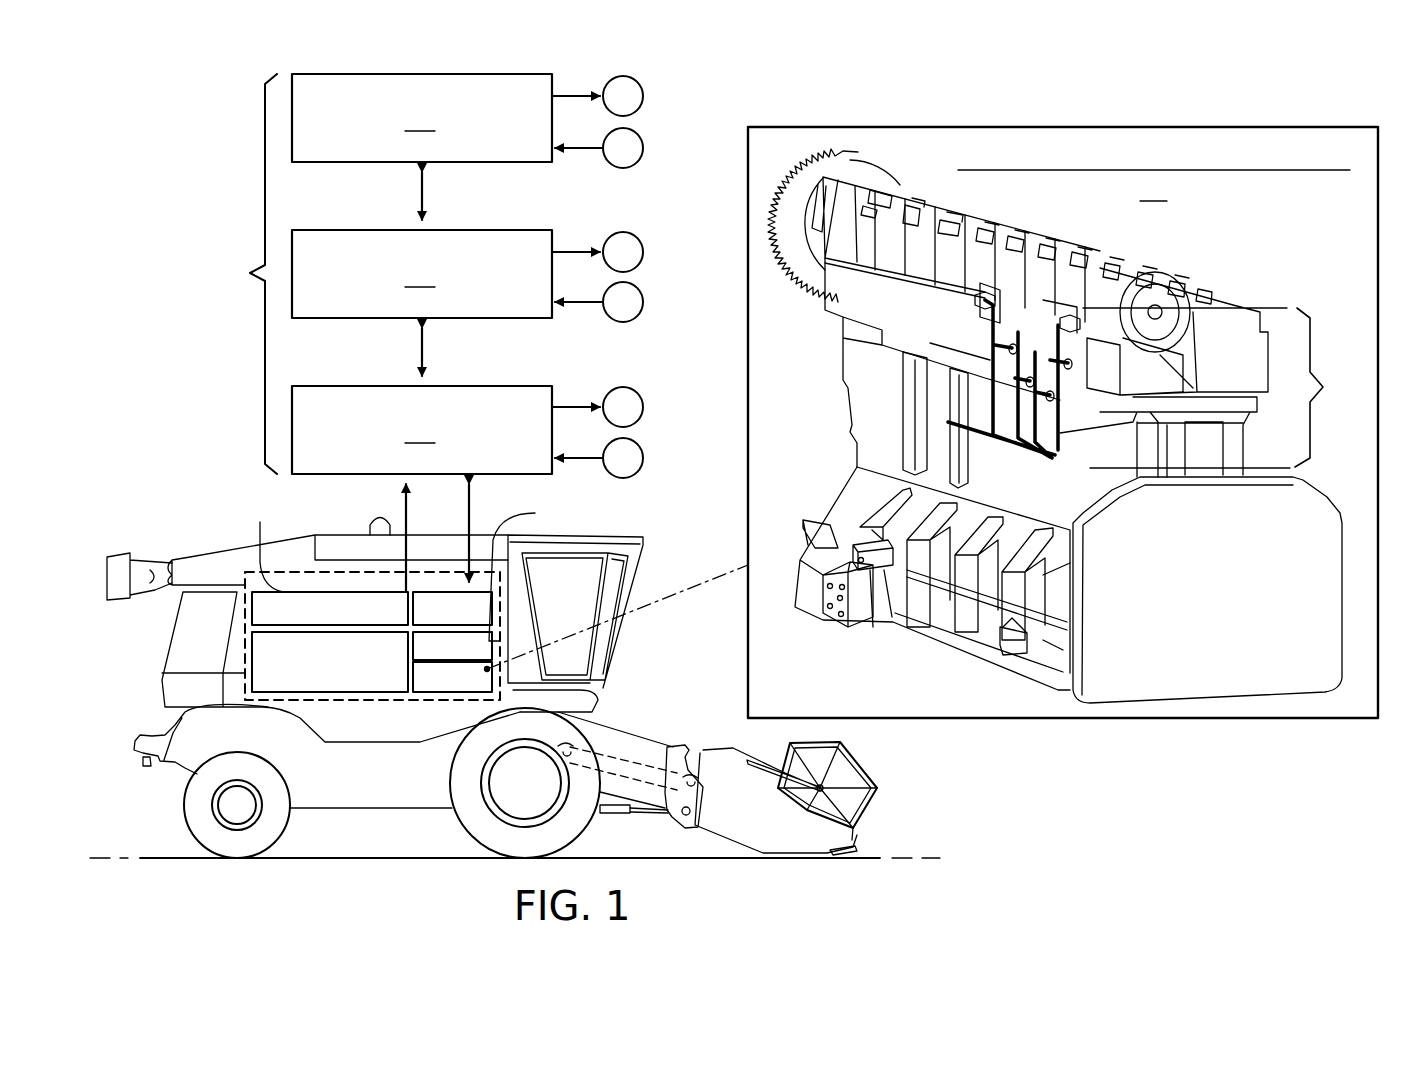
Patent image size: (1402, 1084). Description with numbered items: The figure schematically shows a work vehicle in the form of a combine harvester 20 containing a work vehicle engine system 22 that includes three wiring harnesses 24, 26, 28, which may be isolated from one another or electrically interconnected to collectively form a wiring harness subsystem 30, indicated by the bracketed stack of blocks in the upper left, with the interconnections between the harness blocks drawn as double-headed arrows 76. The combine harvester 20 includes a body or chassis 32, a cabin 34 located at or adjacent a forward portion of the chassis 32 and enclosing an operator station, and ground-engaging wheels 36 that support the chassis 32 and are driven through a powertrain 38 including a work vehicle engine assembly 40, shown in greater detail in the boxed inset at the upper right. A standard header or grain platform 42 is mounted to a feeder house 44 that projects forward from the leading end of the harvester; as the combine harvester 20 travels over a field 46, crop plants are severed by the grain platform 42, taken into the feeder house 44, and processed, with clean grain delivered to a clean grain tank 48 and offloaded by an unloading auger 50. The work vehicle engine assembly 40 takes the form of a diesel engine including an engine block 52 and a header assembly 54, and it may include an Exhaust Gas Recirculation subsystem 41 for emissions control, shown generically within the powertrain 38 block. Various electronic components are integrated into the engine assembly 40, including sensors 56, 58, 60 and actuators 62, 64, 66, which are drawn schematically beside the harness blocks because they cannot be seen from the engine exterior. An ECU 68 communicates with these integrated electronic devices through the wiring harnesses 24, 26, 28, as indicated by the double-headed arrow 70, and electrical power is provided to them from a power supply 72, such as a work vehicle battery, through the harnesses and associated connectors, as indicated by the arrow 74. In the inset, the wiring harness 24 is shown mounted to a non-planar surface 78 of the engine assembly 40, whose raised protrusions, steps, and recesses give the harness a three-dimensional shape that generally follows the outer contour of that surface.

The combine harvester 20 is at (225, 503).
The work vehicle engine system 22 is at (243, 652).
The wiring harness 24 is at (1055, 468).
The wiring harness 26 is at (422, 274).
The wiring harness 28 is at (422, 430).
The wiring harness subsystem 30 is at (250, 273).
The chassis 32 is at (365, 812).
The cabin 34 is at (618, 645).
The ground-engaging wheels 36 is at (195, 805).
The powertrain 38 is at (332, 700).
The work vehicle engine assembly 40 is at (1036, 491).
The Exhaust Gas Recirculation (EGR) subsystem 41 is at (497, 662).
The grain platform 42 is at (718, 750).
The feeder house 44 is at (630, 750).
The field 46 is at (805, 860).
The clean grain tank 48 is at (335, 537).
The unloading auger 50 is at (205, 565).
The engine block 52 is at (882, 620).
The header assembly 54 is at (1135, 265).
The sensor 56 is at (643, 462).
The sensor 58 is at (643, 306).
The sensor 60 is at (643, 152).
The actuator 62 is at (643, 411).
The actuator 64 is at (643, 256).
The actuator 66 is at (643, 100).
The ECU 68 is at (527, 571).
The double-headed arrow 70 is at (472, 505).
The power supply 72 is at (263, 541).
The arrow 74 is at (410, 550).
The communication links between controllers 76 is at (422, 196).
The non-planar surface 78 is at (1330, 387).